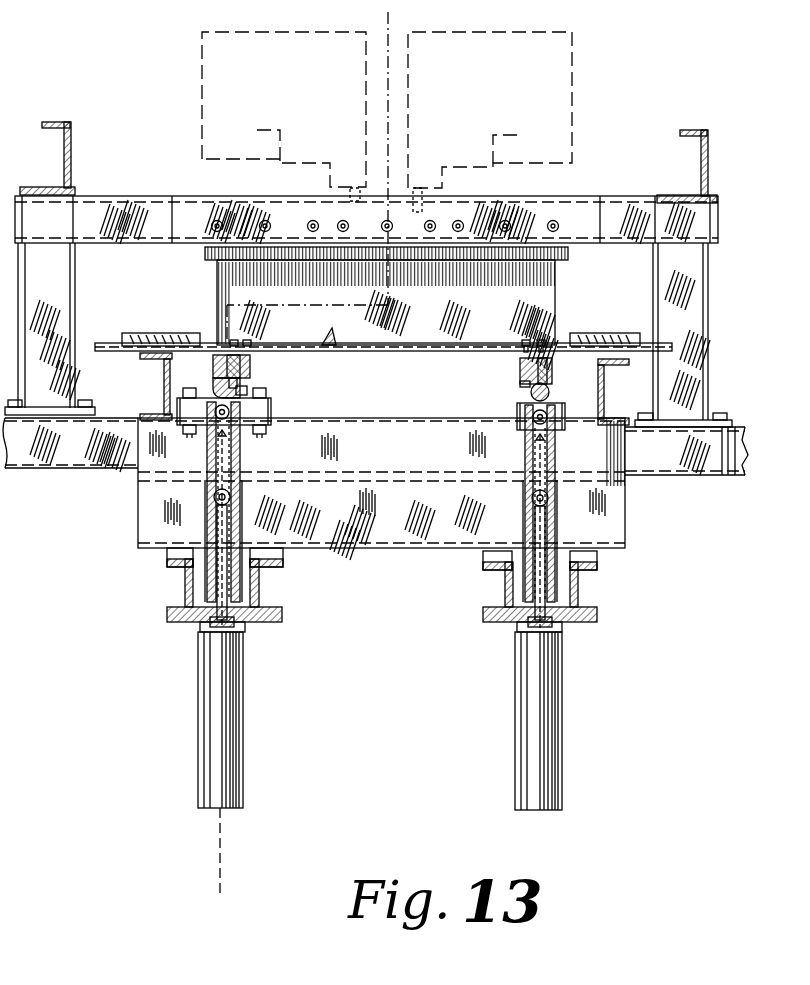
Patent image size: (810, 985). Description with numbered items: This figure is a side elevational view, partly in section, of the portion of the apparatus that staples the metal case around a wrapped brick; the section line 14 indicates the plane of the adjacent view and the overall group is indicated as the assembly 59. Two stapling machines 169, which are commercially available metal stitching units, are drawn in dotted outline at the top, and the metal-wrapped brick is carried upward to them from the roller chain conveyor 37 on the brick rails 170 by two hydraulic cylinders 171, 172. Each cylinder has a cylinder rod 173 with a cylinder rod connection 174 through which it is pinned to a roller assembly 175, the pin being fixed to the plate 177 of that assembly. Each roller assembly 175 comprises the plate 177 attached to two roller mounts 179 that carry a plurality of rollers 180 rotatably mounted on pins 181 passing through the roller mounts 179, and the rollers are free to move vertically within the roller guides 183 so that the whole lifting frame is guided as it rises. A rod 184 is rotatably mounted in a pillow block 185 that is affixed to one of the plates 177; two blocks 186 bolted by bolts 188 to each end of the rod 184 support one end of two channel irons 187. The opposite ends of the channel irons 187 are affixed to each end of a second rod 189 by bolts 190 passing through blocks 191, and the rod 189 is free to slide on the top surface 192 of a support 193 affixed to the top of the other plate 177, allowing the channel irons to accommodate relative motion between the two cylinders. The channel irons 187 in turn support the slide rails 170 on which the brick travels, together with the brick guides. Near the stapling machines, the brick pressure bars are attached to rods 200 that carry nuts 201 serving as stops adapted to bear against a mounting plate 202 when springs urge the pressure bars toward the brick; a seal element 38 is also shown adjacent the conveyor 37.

The section line 14- 14 is at (388, 20).
The roller chain conveyor 37 is at (123, 341).
The seal wedge 38 is at (326, 336).
The weighing assembly 59 is at (183, 162).
The stapling machine 169 is at (277, 106).
The brick rail 170 is at (205, 251).
The hydraulic cylinder 171 is at (198, 694).
The hydraulic cylinder 172 is at (562, 702).
The cylinder rod 173 is at (217, 606).
The cylinder rod connection 174 is at (226, 507).
The roller assembly 175 is at (241, 460).
The plate 177 is at (207, 441).
The roller mount 179 is at (207, 463).
The roller 180 is at (236, 493).
The pin 181 is at (234, 424).
The roller guide 183 is at (240, 532).
The rod 184 is at (213, 390).
The pillow block 185 is at (202, 393).
The block 186 is at (250, 364).
The channel iron 187 is at (447, 317).
The bolt 188 is at (247, 392).
The rod 189 is at (551, 391).
The bolt 190 is at (541, 344).
The block 191 is at (546, 370).
The top surface 192 is at (520, 401).
The support 193 is at (571, 410).
The rod 200 is at (343, 221).
The nut 201 is at (432, 221).
The mounting plate 202 is at (487, 206).